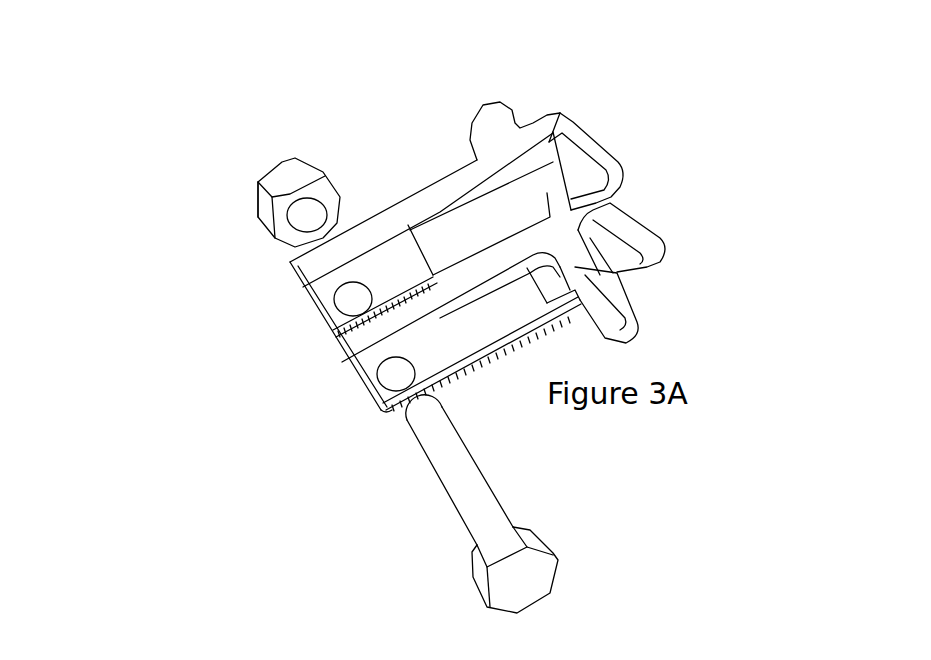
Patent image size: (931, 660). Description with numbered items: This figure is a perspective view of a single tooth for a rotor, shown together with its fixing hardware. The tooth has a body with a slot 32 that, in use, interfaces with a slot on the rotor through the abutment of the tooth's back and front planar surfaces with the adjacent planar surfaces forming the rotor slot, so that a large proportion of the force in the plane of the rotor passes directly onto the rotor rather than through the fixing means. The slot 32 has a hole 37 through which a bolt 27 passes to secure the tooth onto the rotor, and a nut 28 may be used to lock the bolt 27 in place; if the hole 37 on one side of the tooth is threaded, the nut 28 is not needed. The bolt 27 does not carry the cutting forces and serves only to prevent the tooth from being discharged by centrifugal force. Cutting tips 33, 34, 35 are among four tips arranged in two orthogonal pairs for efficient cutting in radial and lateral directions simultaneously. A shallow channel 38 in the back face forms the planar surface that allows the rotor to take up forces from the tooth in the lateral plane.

The bolt 27 is at (490, 482).
The nut 28 is at (257, 175).
The slot 32 is at (335, 338).
The cutting tip 33 is at (640, 307).
The cutting tip 34 is at (667, 233).
The cutting tip 35 is at (623, 160).
The hole 37 is at (383, 403).
The shallow channel 38 is at (480, 206).